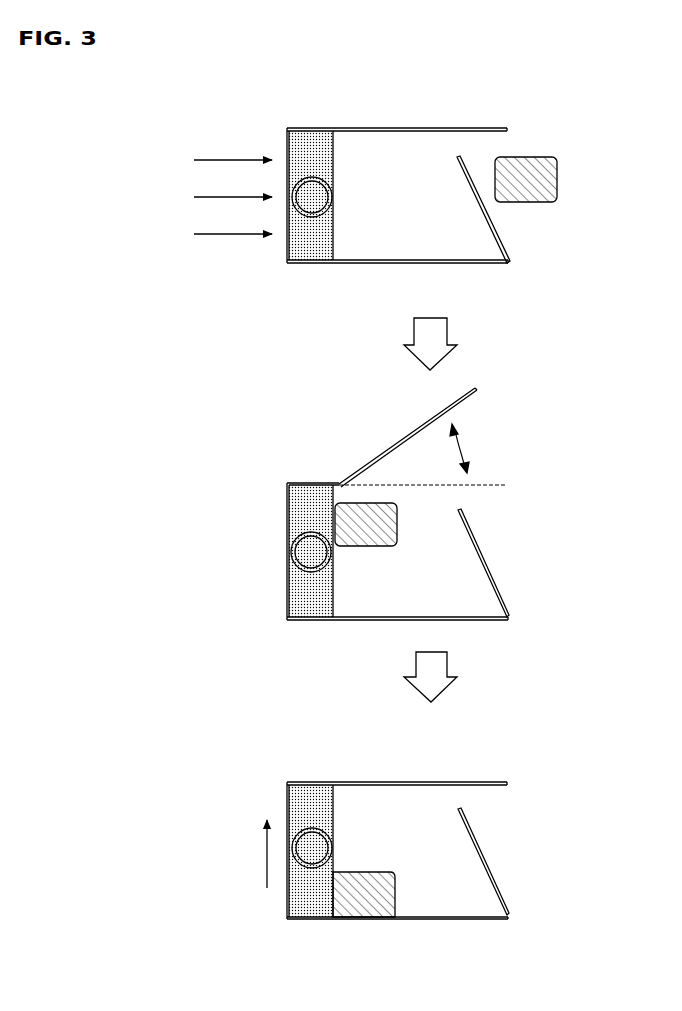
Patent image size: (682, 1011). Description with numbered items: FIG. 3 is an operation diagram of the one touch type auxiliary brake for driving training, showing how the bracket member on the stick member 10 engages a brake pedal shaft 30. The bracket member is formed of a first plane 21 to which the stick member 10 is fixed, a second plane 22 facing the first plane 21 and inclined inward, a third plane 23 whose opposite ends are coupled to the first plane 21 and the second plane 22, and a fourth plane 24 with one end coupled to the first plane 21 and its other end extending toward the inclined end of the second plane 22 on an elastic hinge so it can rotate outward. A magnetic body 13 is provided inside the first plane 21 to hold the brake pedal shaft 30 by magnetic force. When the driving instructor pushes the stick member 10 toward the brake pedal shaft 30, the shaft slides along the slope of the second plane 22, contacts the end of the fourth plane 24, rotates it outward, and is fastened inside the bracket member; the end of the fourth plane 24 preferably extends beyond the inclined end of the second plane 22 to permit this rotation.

The camera 10 is at (331, 197).
The camera mounting panel 13 is at (333, 152).
The housing side wall 21 is at (287, 138).
The inclined wall 22 is at (500, 240).
The bottom plate 23 is at (397, 266).
The top cover 24 is at (424, 128).
The filter block 30 is at (557, 178).